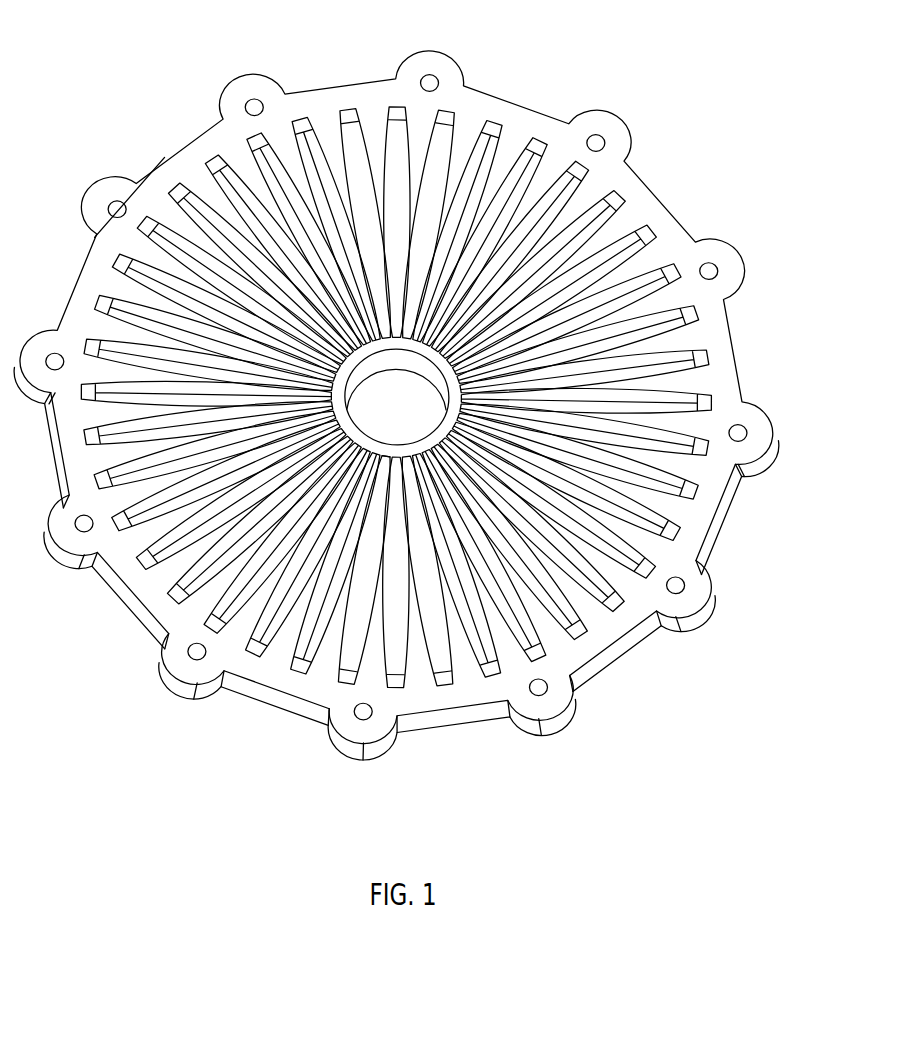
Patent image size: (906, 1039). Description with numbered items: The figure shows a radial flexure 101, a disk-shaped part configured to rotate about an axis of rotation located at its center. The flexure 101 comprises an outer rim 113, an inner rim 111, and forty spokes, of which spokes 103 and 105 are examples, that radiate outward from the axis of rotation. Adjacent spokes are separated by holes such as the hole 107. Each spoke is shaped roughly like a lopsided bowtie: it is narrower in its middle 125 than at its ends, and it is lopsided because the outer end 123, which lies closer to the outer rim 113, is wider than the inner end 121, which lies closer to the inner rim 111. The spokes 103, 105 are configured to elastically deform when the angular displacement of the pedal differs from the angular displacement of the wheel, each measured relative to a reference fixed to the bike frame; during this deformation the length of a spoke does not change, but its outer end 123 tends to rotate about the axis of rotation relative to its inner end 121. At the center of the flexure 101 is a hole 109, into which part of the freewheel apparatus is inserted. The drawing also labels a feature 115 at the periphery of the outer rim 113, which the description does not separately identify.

The radial flexure 101 is at (583, 79).
The spoke 103 is at (110, 283).
The spoke 105 is at (100, 330).
The hole 107 is at (153, 325).
The hole 109 is at (437, 413).
The inner rim 111 is at (368, 352).
The outer rim 113 is at (187, 153).
The mounting hole 115 is at (245, 106).
The inner end 121 is at (380, 460).
The outer end 123 is at (327, 655).
The middle 125 is at (343, 578).